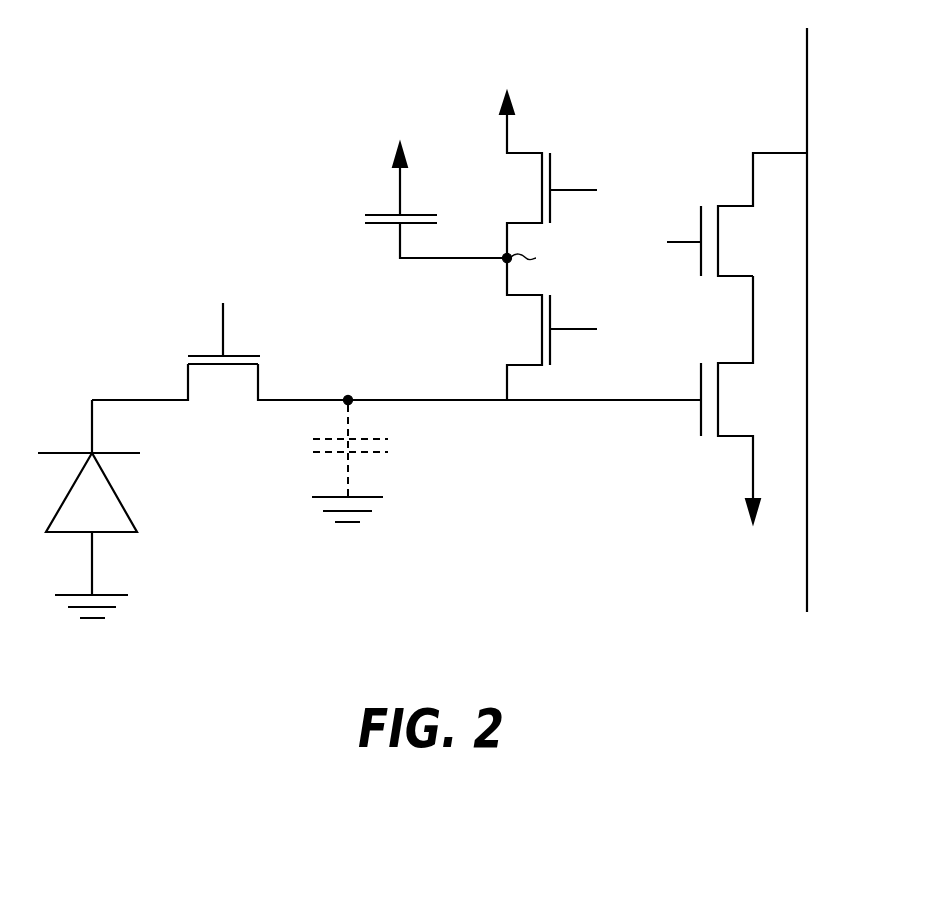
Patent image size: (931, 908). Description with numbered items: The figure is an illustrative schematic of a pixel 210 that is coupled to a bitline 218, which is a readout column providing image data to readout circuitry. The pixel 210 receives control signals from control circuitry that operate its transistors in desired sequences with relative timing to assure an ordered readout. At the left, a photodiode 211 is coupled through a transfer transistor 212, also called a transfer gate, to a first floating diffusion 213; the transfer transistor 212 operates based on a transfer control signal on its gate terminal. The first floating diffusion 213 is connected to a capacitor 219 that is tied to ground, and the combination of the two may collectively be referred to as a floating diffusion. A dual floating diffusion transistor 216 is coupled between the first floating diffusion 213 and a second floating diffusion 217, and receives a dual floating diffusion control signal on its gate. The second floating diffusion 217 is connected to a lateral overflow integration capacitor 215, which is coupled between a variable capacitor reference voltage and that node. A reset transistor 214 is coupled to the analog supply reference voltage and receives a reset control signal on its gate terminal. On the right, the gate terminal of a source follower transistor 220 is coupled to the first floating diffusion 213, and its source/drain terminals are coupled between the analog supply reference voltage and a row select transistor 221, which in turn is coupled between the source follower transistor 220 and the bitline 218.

The pixel 210 is at (152, 190).
The photodiode 211 is at (128, 500).
The transfer transistor 212 is at (213, 352).
The floating diffusion 213 is at (356, 405).
The reset transistor 214 is at (530, 188).
The lateral overflow integration capacitor 215 is at (393, 203).
The dual floating diffusion transistor 216 is at (530, 329).
The floating diffusion 217 is at (517, 243).
The bitline 218 is at (803, 347).
The capacitor 219 is at (330, 460).
The source follower transistor 220 is at (730, 402).
The row select transistor 221 is at (730, 238).